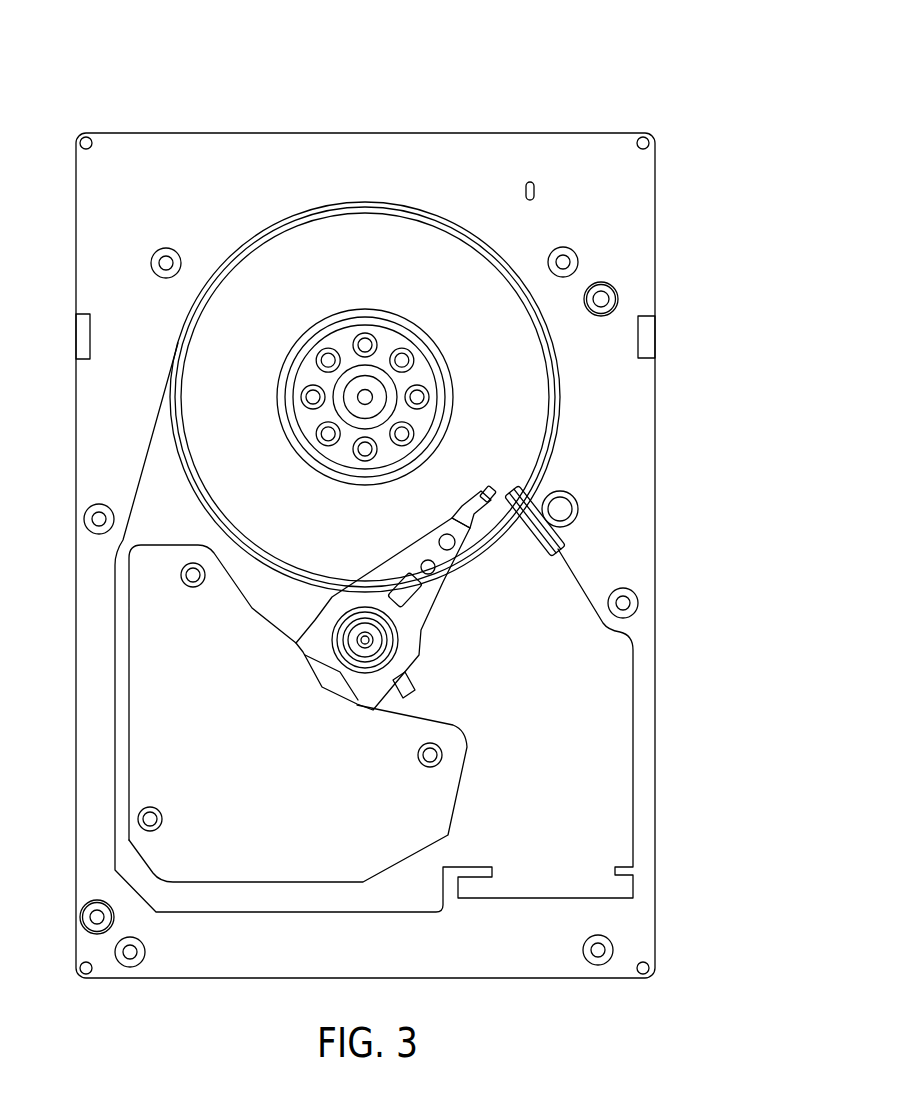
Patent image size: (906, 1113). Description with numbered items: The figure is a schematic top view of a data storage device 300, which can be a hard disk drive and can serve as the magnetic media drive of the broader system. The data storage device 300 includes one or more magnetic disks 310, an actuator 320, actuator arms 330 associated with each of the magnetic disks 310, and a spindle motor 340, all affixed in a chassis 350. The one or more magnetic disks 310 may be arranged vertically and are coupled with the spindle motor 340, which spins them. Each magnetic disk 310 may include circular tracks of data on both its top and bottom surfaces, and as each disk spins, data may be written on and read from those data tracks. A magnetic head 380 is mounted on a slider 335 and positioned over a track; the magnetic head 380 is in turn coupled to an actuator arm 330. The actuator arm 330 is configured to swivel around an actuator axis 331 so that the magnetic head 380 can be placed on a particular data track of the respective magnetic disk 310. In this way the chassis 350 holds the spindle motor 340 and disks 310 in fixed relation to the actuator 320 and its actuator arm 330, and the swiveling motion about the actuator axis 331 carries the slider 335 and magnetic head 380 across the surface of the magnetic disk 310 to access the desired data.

The data storage device 300 is at (656, 57).
The chassis 350 is at (270, 132).
The magnetic disk 310 is at (440, 257).
The spindle motor 340 is at (336, 383).
The actuator arm 330 is at (443, 583).
The actuator axis 331 is at (370, 640).
The slider 335 is at (472, 503).
The magnetic head 380 is at (492, 486).
The actuator 320 is at (422, 789).